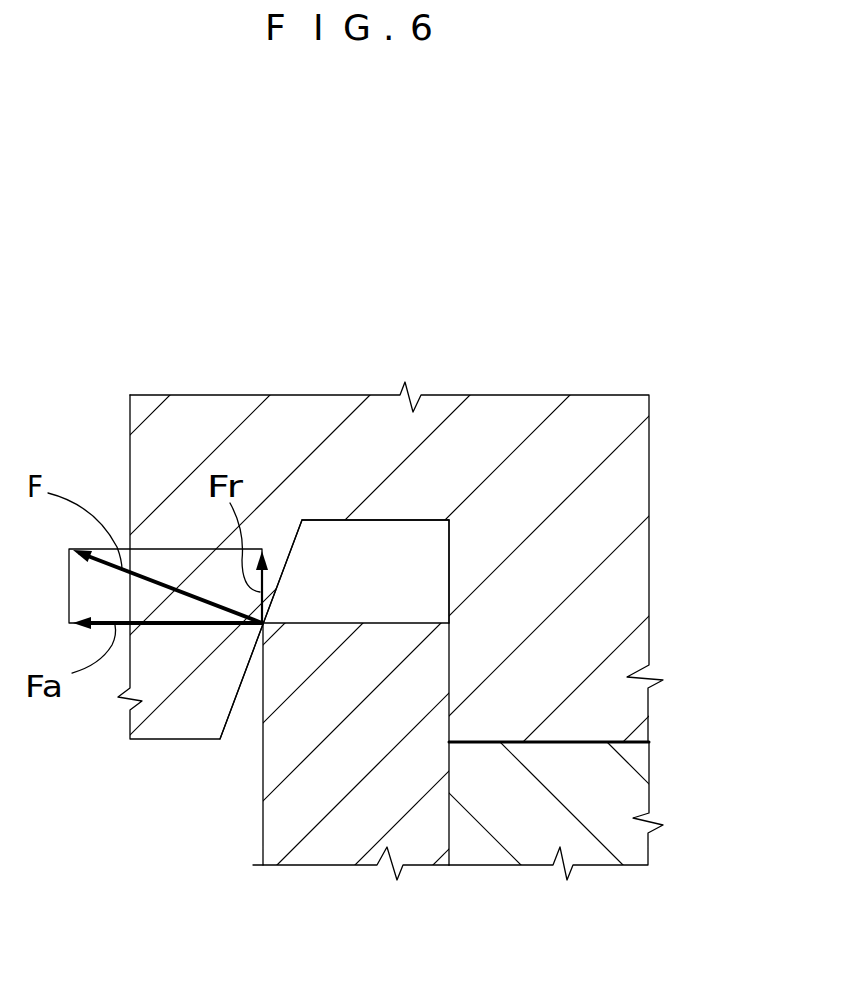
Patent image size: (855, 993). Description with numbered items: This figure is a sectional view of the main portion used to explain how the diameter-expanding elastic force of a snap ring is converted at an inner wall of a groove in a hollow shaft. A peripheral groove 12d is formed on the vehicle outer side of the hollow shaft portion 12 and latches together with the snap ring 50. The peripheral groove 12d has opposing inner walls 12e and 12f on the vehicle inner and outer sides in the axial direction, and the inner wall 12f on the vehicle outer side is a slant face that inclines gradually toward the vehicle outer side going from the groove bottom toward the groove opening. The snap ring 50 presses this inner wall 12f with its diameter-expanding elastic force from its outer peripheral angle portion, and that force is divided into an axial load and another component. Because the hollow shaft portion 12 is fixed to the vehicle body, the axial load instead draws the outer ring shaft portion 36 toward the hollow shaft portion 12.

The hollow shaft portion 12 is at (452, 497).
The peripheral groove 12d is at (420, 565).
The inner wall 12e is at (440, 570).
The inner wall 12f is at (229, 712).
The snap ring 50 is at (428, 670).
The outer ring shaft portion 36 is at (613, 818).